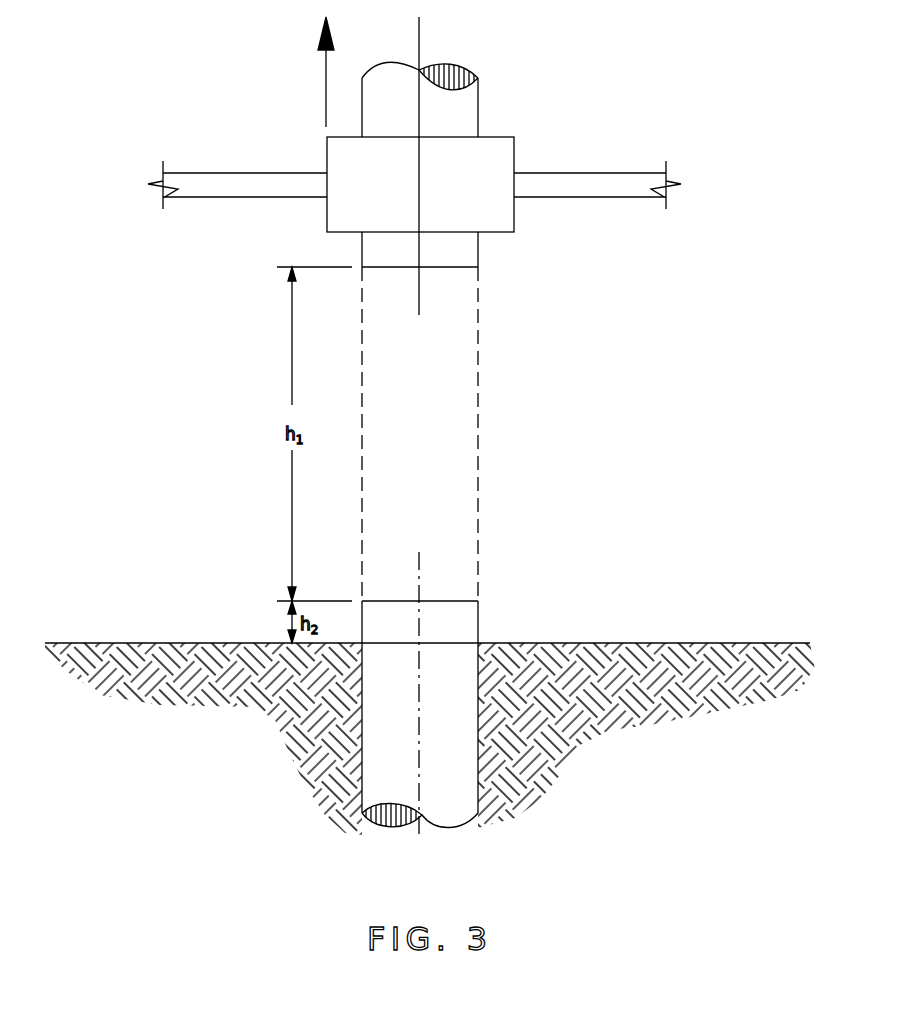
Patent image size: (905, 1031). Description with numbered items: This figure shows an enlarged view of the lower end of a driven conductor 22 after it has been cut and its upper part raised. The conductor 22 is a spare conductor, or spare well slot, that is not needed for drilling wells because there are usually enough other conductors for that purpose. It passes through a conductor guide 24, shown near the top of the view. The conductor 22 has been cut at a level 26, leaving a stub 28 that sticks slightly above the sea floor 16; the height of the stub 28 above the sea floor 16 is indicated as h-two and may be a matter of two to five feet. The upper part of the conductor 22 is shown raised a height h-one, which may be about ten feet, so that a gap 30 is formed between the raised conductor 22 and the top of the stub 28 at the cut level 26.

The sea floor 16 is at (655, 650).
The driven conductor 22 is at (458, 113).
The conductor guide 24 is at (502, 155).
The level 26 is at (462, 601).
The stub 28 is at (463, 630).
The gap 30 is at (478, 403).